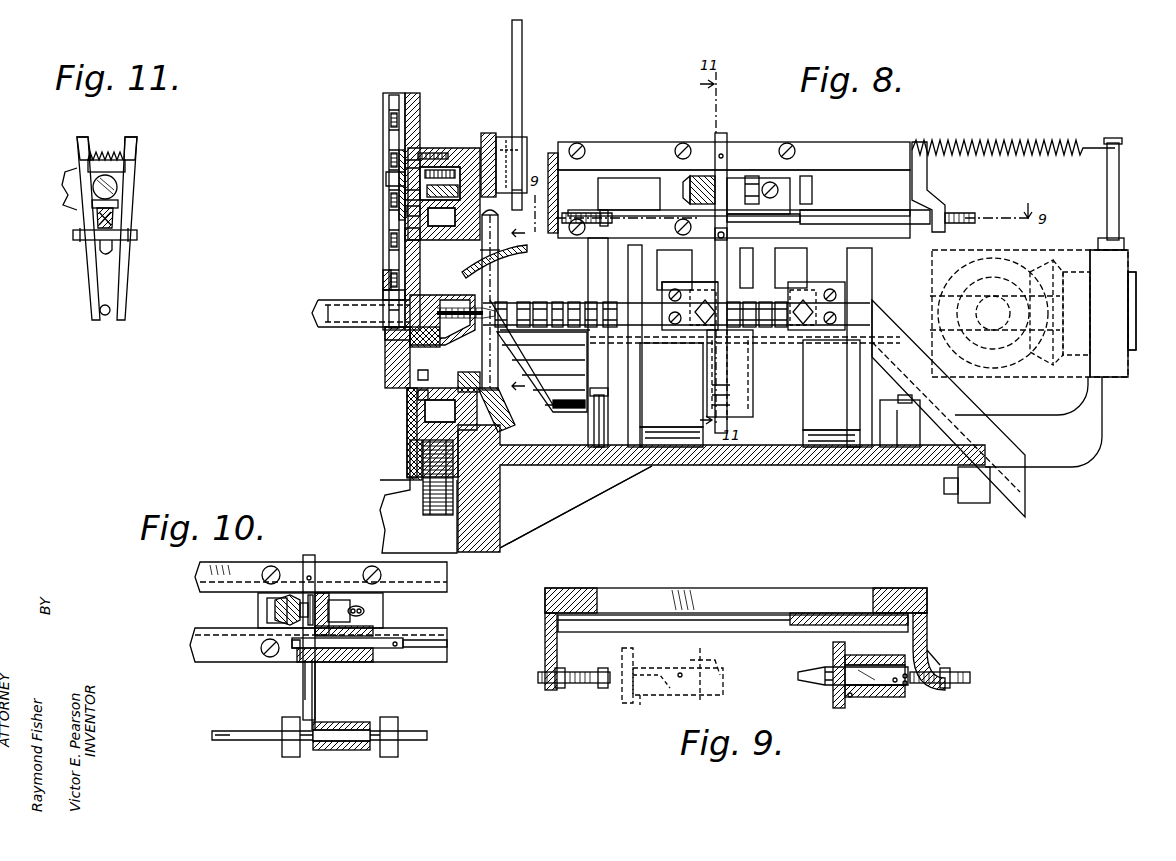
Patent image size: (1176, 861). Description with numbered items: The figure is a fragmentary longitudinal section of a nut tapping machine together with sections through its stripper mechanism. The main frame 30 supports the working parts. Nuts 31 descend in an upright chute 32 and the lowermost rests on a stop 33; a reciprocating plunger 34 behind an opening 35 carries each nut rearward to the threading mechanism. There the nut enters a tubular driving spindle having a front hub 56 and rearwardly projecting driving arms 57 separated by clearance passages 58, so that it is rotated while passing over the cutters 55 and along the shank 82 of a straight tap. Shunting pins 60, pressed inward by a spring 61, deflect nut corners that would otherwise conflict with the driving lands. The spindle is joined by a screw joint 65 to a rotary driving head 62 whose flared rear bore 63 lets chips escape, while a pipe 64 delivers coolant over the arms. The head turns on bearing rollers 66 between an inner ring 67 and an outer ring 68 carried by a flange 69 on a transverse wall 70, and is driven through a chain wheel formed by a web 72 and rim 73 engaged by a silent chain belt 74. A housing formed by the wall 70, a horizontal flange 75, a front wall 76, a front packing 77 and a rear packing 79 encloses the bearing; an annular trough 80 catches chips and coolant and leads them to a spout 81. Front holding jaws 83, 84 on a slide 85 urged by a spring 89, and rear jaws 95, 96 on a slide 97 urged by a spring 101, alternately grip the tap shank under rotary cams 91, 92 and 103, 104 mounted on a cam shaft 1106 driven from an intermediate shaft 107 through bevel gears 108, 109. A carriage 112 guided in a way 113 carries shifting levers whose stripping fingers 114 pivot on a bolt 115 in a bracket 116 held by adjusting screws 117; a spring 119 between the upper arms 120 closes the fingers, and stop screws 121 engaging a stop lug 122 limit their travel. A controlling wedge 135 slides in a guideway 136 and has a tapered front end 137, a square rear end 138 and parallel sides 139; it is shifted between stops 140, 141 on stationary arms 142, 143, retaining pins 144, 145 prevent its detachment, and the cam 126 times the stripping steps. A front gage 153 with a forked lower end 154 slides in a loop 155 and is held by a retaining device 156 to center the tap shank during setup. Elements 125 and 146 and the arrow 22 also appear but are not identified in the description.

In FIG. 8, the main frame 30 is at (500, 549).
In FIG. 8, the nuts or blanks 31 is at (395, 94).
In FIG. 10, the nuts or blanks 31 is at (333, 752).
In FIG. 8, the upright guide chute 32 is at (413, 94).
In FIG. 8, the shelf or stop 33 is at (386, 336).
In FIG. 8, the reciprocating plunger 34 is at (312, 313).
In FIG. 8, the opening 35 is at (385, 293).
In FIG. 8, the cutters 55 is at (462, 303).
In FIG. 8, the front tubular hub 56 is at (400, 345).
In FIG. 8, the driving and guiding arms 57 is at (545, 335).
In FIG. 8, the clearance passages 58 is at (443, 326).
In FIG. 8, the shunting pins 60 is at (380, 312).
In FIG. 8, the spring 61 is at (384, 278).
In FIG. 8, the rotary driving head 62 is at (405, 234).
In FIG. 8, the rear part of bore 63 is at (486, 345).
In FIG. 8, the pipe 64 is at (510, 262).
In FIG. 8, the screw joint 65 is at (420, 360).
In FIG. 8, the bearing rollers 66 is at (425, 432).
In FIG. 8, the inner bearing ring 67 is at (405, 196).
In FIG. 8, the outer bearing ring 68 is at (395, 183).
In FIG. 8, the annular flange 69 is at (405, 165).
In FIG. 8, the transverse wall 70 is at (475, 470).
In FIG. 8, the web 72 is at (400, 155).
In FIG. 8, the rim 73 is at (440, 185).
In FIG. 8, the silent chain belt 74 is at (440, 510).
In FIG. 8, the horizontal flange 75 is at (442, 148).
In FIG. 8, the front wall 76 is at (413, 445).
In FIG. 8, the front packing 77 is at (407, 211).
In FIG. 8, the rear packing 79 is at (480, 380).
In FIG. 8, the annular trough 80 is at (498, 274).
In FIG. 8, the spout 81 is at (500, 425).
In FIG. 8, the tap shank 82 is at (605, 327).
In FIG. 10, the tap shank 82 is at (218, 740).
In FIG. 11, the tap shank 82 is at (103, 318).
In FIG. 8, the front holding jaw 83 is at (690, 298).
In FIG. 10, the front holding jaw 84 is at (290, 755).
In FIG. 8, the slide 85 is at (655, 387).
In FIG. 8, the spring 89 is at (595, 420).
In FIG. 8, the rotary cam 91 is at (608, 342).
In FIG. 8, the rotary cam 92 is at (715, 268).
In FIG. 8, the rear tap holding jaw 95 is at (818, 285).
In FIG. 10, the rear tap holding jaw 96 is at (390, 755).
In FIG. 8, the slide 97 is at (848, 393).
In FIG. 8, the spring 101 is at (898, 410).
In FIG. 8, the rotary cam 103 is at (885, 253).
In FIG. 8, the rotary cam 104 is at (770, 407).
In FIG. 8, the intermediate shaft 107 is at (1003, 295).
In FIG. 8, the bevel gear wheel 108 is at (988, 370).
In FIG. 8, the bevel gear wheel 109 is at (1042, 362).
In FIG. 8, the cam shaft 1106 is at (1138, 320).
In FIG. 8, the carriage 112 is at (678, 172).
In FIG. 9, the carriage 112 is at (815, 615).
In FIG. 10, the carriage 112 is at (258, 600).
In FIG. 8, the way 113 is at (822, 160).
In FIG. 9, the way 113 is at (745, 620).
In FIG. 10, the way 113 is at (198, 570).
In FIG. 8, the stripping fingers 114 is at (729, 350).
In FIG. 9, the stripping fingers 114 is at (620, 652).
In FIG. 10, the stripping fingers 114 is at (318, 712).
In FIG. 11, the stripping fingers 114 is at (90, 276).
In FIG. 10, the pivot screw or bolt 115 is at (320, 600).
In FIG. 11, the pivot screw or bolt 115 is at (92, 185).
In FIG. 8, the bracket 116 is at (758, 199).
In FIG. 9, the bracket 116 is at (898, 710).
In FIG. 10, the bracket 116 is at (365, 630).
In FIG. 11, the bracket 116 is at (68, 206).
In FIG. 8, the adjusting screws 117 is at (690, 190).
In FIG. 10, the adjusting screws 117 is at (365, 602).
In FIG. 10, the spring 119 is at (305, 575).
In FIG. 11, the spring 119 is at (108, 150).
In FIG. 8, the upper arms 120 is at (723, 134).
In FIG. 10, the upper arms 120 is at (311, 562).
In FIG. 11, the upper arms 120 is at (78, 140).
In FIG. 10, the adjustable stop screws 121 is at (301, 668).
In FIG. 11, the adjustable stop screws 121 is at (92, 243).
In FIG. 8, the stop lug 122 is at (724, 240).
In FIG. 10, the stop lug 122 is at (320, 660).
In FIG. 11, the stop lug 122 is at (112, 252).
In FIG. 8, the spring 125 is at (1003, 140).
In FIG. 8, the cam 126 is at (538, 356).
In FIG. 8, the stripper controlling wedge 135 is at (880, 222).
In FIG. 9, the stripper controlling wedge 135 is at (870, 727).
In FIG. 10, the stripper controlling wedge 135 is at (365, 652).
In FIG. 11, the stripper controlling wedge 135 is at (114, 222).
In FIG. 9, the guideway 136 is at (850, 700).
In FIG. 9, the wedge shaped front end 137 is at (642, 700).
In FIG. 10, the wedge shaped front end 137 is at (305, 650).
In FIG. 9, the square faced rear end 138 is at (728, 678).
In FIG. 10, the square faced rear end 138 is at (400, 650).
In FIG. 9, the parallel sides 139 is at (870, 665).
In FIG. 8, the front stop 140 is at (585, 212).
In FIG. 9, the front stop 140 is at (585, 686).
In FIG. 8, the rear stop 141 is at (960, 213).
In FIG. 9, the rear stop 141 is at (965, 684).
In FIG. 8, the stationary arm 142 is at (568, 172).
In FIG. 9, the stationary arm 142 is at (550, 690).
In FIG. 8, the stationary arm 143 is at (928, 190).
In FIG. 9, the stationary arm 143 is at (942, 675).
In FIG. 9, the retaining pin 144 is at (826, 672).
In FIG. 10, the retaining pin 144 is at (295, 642).
In FIG. 11, the retaining pin 144 is at (118, 205).
In FIG. 8, the retaining pin 145 is at (828, 211).
In FIG. 9, the retaining pin 145 is at (925, 655).
In FIG. 10, the retaining pin 145 is at (447, 644).
In FIG. 9, the link 146 is at (712, 672).
In FIG. 8, the front gage 153 is at (522, 86).
In FIG. 8, the forked lower end 154 is at (518, 195).
In FIG. 8, the loop 155 is at (520, 148).
In FIG. 8, the spring pressed retaining device 156 is at (490, 132).
In FIG. 8, the direction arrow 22 is at (522, 306).